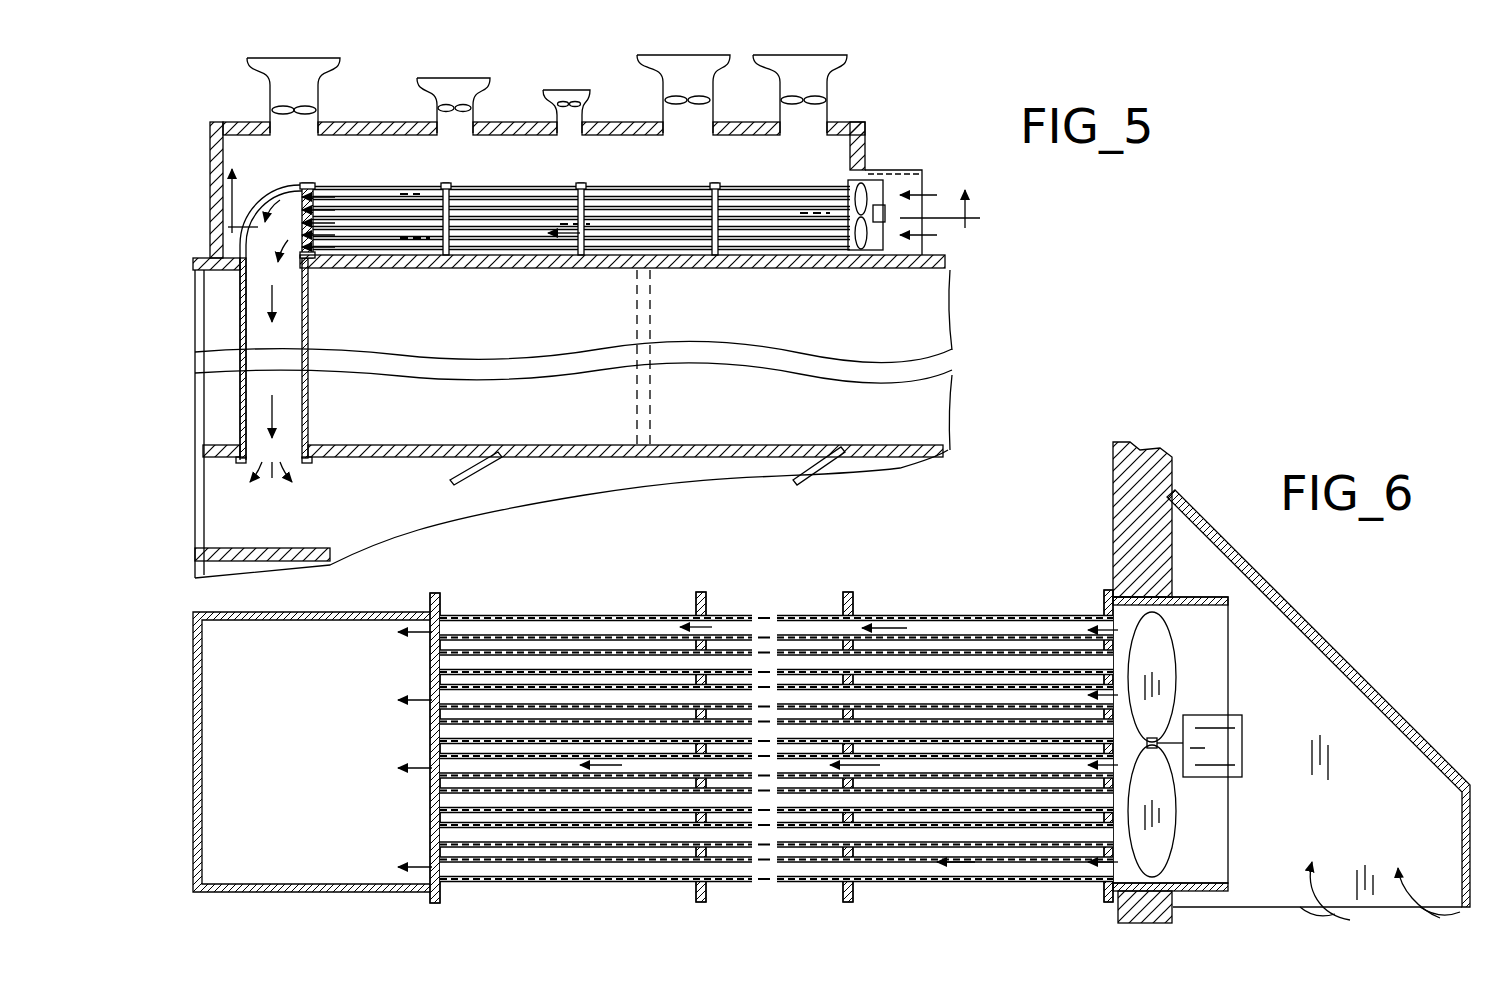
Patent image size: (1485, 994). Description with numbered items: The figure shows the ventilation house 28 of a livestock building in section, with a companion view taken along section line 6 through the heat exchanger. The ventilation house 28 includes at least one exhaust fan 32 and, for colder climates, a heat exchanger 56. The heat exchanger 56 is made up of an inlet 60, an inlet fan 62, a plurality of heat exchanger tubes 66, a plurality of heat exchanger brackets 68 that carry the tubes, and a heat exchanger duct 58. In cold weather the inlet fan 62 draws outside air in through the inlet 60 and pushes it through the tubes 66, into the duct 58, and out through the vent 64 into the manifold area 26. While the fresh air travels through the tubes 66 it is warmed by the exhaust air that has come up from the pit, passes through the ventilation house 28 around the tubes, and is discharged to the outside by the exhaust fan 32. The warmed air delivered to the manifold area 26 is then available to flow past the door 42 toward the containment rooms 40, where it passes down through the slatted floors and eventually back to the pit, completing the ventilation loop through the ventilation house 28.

In FIG. 5, the manifold area 26 is at (385, 518).
In FIG. 5, the ventilation house 28 is at (203, 122).
In FIG. 5, the exhaust fan 32 is at (335, 84).
In FIG. 5, the containment room 40 is at (700, 425).
In FIG. 5, the door 42 is at (475, 476).
In FIG. 5, the heat exchanger 56 is at (628, 184).
In FIG. 6, the heat exchanger 56 is at (808, 608).
In FIG. 5, the heat exchanger duct 58 is at (308, 393).
In FIG. 5, the inlet 60 is at (913, 178).
In FIG. 6, the inlet 60 is at (1310, 900).
In FIG. 5, the inlet fan 62 is at (866, 198).
In FIG. 6, the inlet fan 62 is at (1172, 648).
In FIG. 5, the vent 64 is at (294, 478).
In FIG. 6, the heat exchanger tubes 66 is at (930, 700).
In FIG. 6, the heat exchanger brackets 68 is at (443, 893).
In FIG. 5, the section line 6 is at (603, 186).